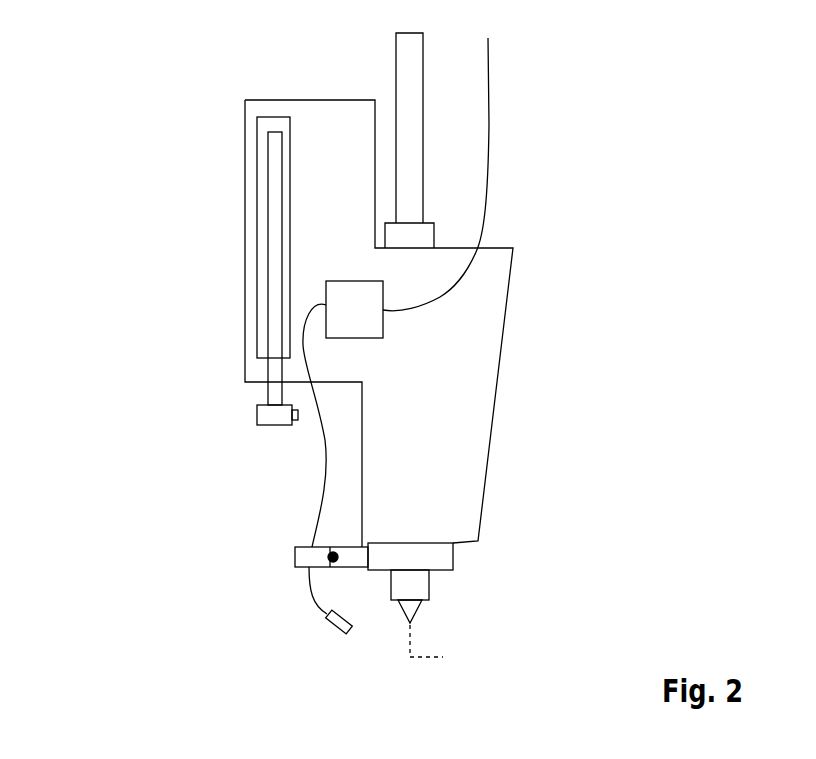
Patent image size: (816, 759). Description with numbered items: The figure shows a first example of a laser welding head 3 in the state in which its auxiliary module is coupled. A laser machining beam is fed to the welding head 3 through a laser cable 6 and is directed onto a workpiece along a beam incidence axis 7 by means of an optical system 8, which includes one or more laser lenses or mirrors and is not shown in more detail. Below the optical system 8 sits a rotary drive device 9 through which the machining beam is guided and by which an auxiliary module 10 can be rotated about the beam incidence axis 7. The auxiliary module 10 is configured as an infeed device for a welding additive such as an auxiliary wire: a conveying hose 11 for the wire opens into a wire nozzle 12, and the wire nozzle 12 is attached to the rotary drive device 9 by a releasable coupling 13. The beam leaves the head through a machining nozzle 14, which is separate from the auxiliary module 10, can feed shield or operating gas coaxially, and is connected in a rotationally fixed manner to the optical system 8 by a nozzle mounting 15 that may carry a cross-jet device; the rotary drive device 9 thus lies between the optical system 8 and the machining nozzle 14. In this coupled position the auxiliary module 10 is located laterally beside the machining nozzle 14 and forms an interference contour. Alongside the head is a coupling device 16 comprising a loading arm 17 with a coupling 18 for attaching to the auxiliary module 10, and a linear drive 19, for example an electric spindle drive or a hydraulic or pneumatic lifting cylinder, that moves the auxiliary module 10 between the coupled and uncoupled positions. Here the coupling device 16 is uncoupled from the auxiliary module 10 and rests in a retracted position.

The laser welding head 3 is at (128, 105).
The laser cable 6 is at (407, 55).
The beam incidence axis 7 is at (443, 653).
The optical system 8 is at (458, 432).
The rotary drive device 9 is at (437, 552).
The auxiliary module 10 is at (270, 550).
The conveying hose 11 is at (489, 112).
The wire nozzle 12 is at (328, 623).
The releasable coupling 13 is at (313, 560).
The machining nozzle 14 is at (412, 610).
The nozzle mounting 15 is at (410, 585).
The coupling device 16 is at (187, 332).
The loading arm 17 is at (277, 373).
The coupling 18 is at (280, 415).
The linear drive 19 is at (253, 252).